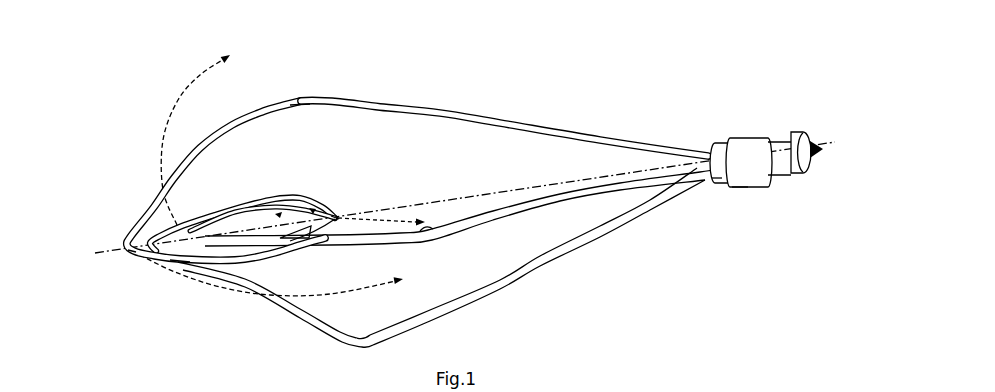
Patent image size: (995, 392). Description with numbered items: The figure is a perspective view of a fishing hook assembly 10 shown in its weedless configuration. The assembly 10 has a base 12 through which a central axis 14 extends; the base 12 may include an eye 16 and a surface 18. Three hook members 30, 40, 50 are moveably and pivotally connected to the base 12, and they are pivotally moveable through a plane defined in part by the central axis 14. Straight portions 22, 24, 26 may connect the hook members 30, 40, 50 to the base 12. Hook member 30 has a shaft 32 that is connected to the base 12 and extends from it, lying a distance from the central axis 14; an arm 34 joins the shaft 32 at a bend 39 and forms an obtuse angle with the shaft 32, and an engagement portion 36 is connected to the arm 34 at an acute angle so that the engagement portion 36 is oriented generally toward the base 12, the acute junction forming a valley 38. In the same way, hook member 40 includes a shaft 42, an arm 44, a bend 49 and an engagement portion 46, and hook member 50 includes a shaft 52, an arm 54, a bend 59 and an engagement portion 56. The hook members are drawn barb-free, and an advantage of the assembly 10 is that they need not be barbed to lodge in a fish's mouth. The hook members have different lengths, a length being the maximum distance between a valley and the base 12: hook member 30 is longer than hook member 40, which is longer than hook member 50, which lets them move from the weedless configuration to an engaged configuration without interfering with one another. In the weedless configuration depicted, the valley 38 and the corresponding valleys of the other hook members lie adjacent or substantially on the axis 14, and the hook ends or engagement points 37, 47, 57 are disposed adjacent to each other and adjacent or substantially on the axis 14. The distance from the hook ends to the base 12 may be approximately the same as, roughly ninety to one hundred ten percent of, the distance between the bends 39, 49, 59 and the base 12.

The fishing hook assembly 10 is at (126, 205).
The base 12 is at (773, 180).
The central axis 14 is at (826, 145).
The eye 16 is at (811, 132).
The surface 18 is at (774, 142).
The straight portion 22 is at (710, 146).
The straight portion 24 is at (738, 188).
The straight portion 26 is at (706, 182).
The hook member 30 is at (322, 76).
The shaft 32 is at (544, 123).
The arm 34 is at (237, 124).
The engagement portion 36 is at (178, 267).
The hook end 37 is at (317, 234).
The valley 38 is at (136, 254).
The bend 39 is at (297, 110).
The hook member 40 is at (491, 199).
The shaft 42 is at (543, 200).
The arm 44 is at (367, 233).
The engagement portion 46 is at (183, 227).
The hook end 47 is at (340, 229).
The bend 49 is at (430, 230).
The hook member 50 is at (292, 340).
The shaft 52 is at (576, 252).
The arm 54 is at (266, 306).
The engagement portion 56 is at (298, 195).
The hook end 57 is at (338, 216).
The bend 59 is at (370, 337).